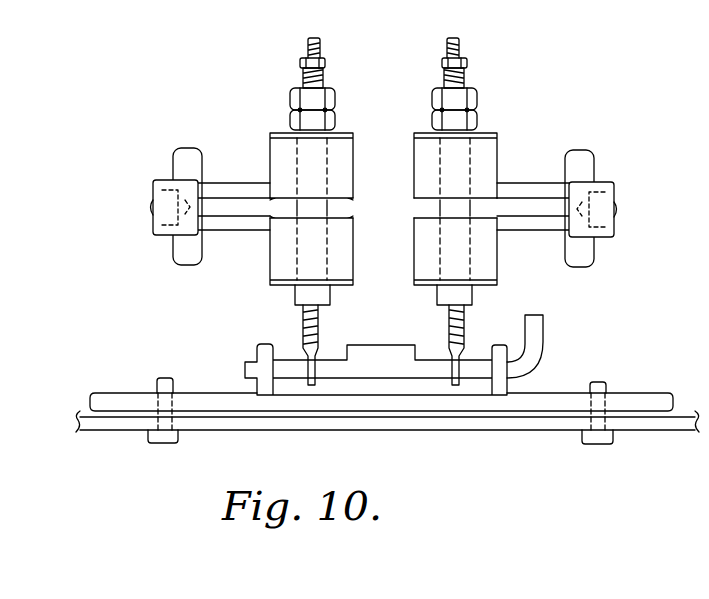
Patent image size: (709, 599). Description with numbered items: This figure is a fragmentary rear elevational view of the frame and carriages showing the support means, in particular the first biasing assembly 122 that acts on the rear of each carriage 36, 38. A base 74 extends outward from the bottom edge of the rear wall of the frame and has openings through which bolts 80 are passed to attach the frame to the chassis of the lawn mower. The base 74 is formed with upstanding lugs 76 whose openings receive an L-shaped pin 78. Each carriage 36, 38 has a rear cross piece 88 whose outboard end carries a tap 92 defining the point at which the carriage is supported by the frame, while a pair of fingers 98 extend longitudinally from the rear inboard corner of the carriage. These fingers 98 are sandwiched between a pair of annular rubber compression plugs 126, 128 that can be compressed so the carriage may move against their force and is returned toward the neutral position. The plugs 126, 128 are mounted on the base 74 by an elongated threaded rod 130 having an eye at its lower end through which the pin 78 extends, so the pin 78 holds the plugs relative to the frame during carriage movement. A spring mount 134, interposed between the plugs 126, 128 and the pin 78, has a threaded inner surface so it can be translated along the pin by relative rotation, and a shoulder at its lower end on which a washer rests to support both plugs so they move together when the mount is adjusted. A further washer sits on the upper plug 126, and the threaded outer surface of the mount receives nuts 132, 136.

The carriage 36 is at (163, 265).
The carriage 38 is at (595, 266).
The base 74 is at (652, 405).
The upstanding lugs 76 is at (262, 380).
The L-shaped pin 78 is at (535, 345).
The bolts 80 is at (163, 437).
The rear cross piece 88 is at (255, 190).
The tap 92 is at (155, 190).
The fingers 98 is at (418, 208).
The first biasing assembly 122 is at (255, 92).
The upper resilient plug 126 is at (282, 145).
The lower resilient plug 128 is at (282, 262).
The threaded rod 130 is at (447, 323).
The nut 132 is at (438, 121).
The spring mount 134 is at (443, 297).
The nut 136 is at (438, 100).